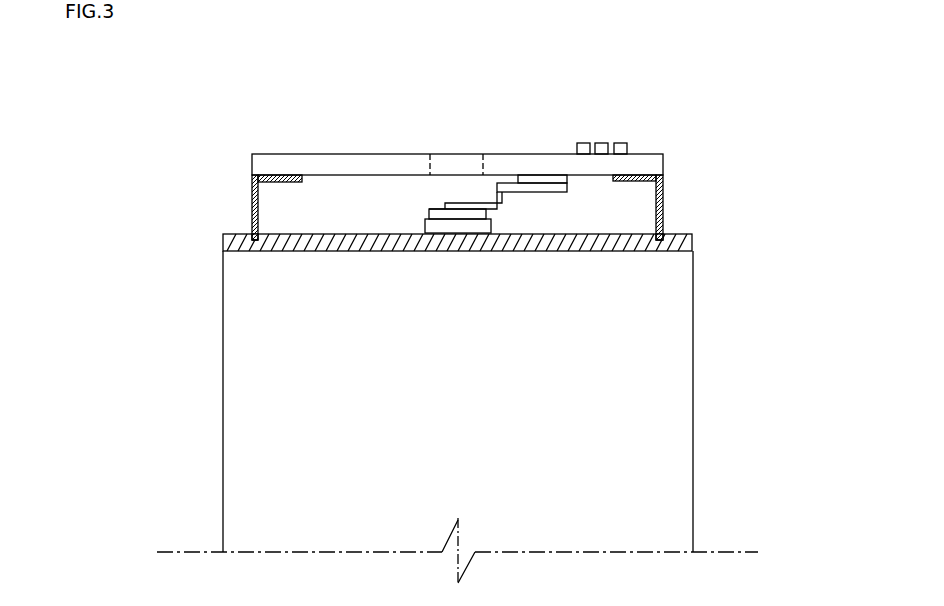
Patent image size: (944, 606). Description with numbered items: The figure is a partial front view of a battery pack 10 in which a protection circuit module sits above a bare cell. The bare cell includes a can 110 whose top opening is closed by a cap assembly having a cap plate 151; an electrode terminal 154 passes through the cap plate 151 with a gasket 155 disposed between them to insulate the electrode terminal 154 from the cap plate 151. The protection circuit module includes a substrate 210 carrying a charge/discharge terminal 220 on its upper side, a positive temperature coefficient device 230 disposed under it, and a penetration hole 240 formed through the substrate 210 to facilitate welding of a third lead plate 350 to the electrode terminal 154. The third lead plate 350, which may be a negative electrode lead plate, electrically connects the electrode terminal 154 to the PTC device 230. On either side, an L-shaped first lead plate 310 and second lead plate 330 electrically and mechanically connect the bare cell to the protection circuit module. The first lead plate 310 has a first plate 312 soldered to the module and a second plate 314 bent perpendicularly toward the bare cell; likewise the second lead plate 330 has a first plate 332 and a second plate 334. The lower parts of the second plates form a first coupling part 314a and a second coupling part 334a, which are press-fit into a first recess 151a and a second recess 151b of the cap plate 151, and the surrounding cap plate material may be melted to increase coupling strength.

The battery pack 10 is at (145, 100).
The can 110 is at (687, 338).
The cap plate 151 is at (692, 240).
The first recess 151a is at (259, 231).
The second recess 151b is at (652, 230).
The electrode terminal 154 is at (430, 209).
The gasket 155 is at (425, 225).
The substrate 210 is at (295, 160).
The charge/discharge terminal 220 is at (620, 143).
The positive temperature coefficient (PTC) device 230 is at (553, 181).
The penetration hole 240 is at (482, 167).
The first lead plate 310 is at (197, 193).
The first plate 312 is at (252, 162).
The second plate 314 is at (252, 210).
The first coupling part 314a is at (204, 226).
The second lead plate 330 is at (719, 193).
The first plate 332 is at (663, 163).
The second plate 334 is at (663, 208).
The second coupling part 334a is at (692, 233).
The third lead plate 350 is at (510, 182).